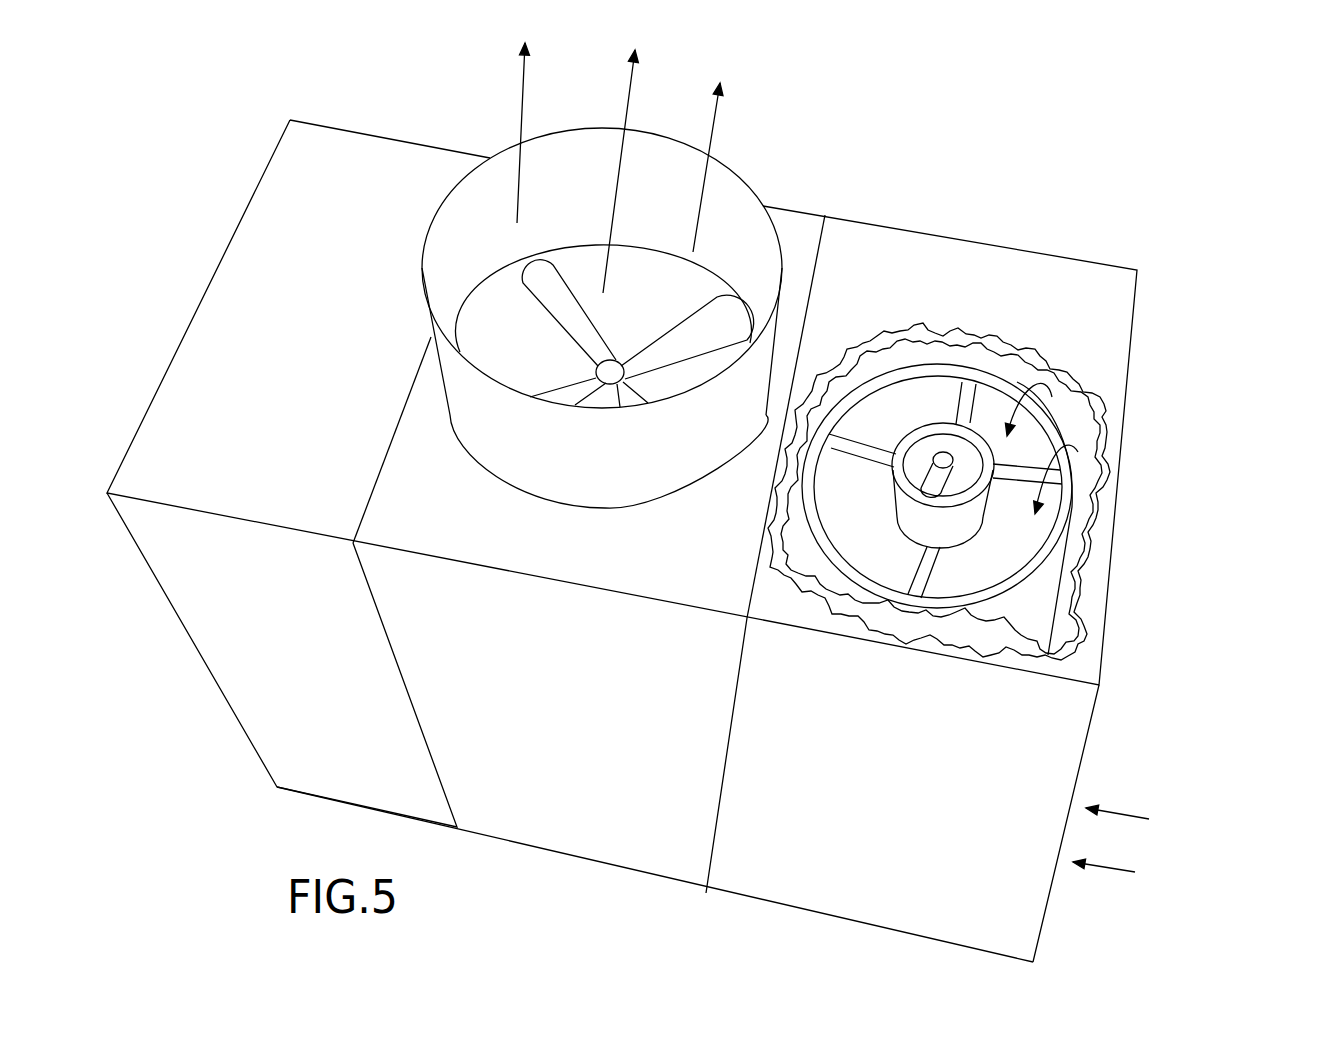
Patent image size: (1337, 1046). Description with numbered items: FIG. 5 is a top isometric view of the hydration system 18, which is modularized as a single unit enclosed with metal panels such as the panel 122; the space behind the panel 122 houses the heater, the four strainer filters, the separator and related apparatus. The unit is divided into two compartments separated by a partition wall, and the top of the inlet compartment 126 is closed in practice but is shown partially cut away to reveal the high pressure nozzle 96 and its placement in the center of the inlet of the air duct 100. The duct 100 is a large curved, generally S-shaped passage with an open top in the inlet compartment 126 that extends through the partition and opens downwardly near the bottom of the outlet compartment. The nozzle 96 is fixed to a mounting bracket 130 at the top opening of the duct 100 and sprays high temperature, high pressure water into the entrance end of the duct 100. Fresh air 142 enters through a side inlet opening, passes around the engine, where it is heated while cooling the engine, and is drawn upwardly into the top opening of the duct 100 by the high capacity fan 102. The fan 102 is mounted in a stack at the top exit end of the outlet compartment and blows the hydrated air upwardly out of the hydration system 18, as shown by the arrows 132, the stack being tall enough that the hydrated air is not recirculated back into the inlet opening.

The hydration system 18 is at (1333, 220).
The high pressure nozzle 96 is at (903, 455).
The air duct 100 is at (963, 609).
The fan 102 is at (678, 331).
The metal panel 122 is at (233, 677).
The inlet compartment 126 is at (1054, 715).
The mounting bracket 130 is at (853, 428).
The arrows 132 is at (716, 131).
The fresh air 142 is at (1135, 872).